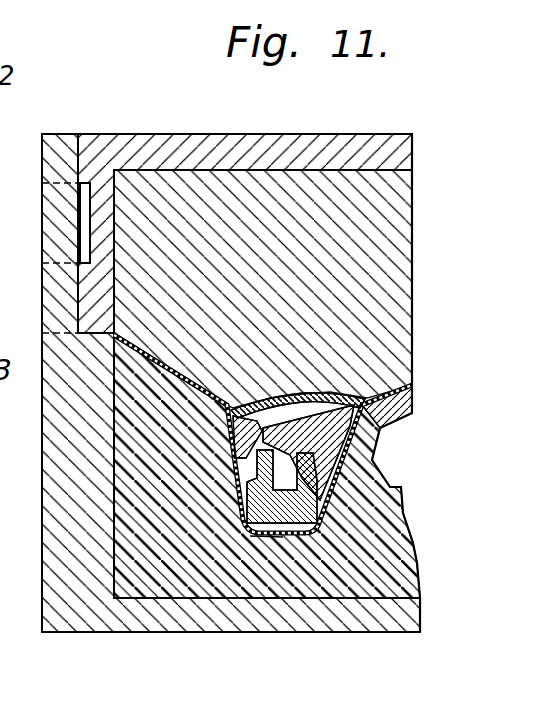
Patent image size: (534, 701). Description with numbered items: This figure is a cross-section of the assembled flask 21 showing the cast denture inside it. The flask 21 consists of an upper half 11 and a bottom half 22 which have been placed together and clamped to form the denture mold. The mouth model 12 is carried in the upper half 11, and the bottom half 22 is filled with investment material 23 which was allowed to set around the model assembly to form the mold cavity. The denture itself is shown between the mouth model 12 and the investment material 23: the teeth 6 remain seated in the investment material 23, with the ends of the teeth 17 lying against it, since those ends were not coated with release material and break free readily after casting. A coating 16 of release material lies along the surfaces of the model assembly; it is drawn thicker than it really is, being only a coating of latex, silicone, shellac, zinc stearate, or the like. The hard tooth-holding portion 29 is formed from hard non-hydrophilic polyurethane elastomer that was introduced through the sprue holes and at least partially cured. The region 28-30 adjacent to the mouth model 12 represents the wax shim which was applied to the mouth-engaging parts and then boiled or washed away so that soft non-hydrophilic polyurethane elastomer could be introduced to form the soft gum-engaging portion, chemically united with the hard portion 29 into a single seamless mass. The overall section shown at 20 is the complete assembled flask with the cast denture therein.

The cell assembly 20 is at (136, 120).
The upper half of the flask 11 is at (196, 134).
The mouth model 12 is at (289, 193).
The bottom half of the flask 22 is at (73, 614).
The flask 21 is at (173, 636).
The investment material 23 is at (343, 578).
The coating of release material 16 is at (227, 467).
The wax shim and hard and soft elastomer portions 28-30 is at (300, 397).
The hard tooth-holding portion 29 is at (323, 443).
The teeth 6 is at (298, 505).
The ends of the teeth 17 is at (283, 537).